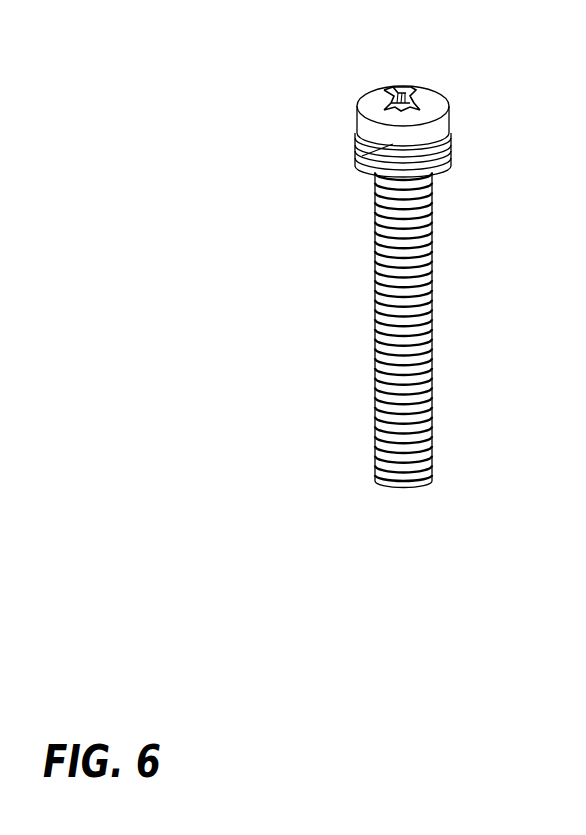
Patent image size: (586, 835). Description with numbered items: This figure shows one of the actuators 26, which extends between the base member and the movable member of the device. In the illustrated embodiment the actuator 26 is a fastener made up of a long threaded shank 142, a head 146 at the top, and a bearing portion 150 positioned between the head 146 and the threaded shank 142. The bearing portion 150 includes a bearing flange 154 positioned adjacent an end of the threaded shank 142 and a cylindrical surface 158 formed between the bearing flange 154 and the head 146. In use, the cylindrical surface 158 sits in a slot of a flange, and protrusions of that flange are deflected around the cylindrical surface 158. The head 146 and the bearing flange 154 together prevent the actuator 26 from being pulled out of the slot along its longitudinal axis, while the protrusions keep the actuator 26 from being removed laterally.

The actuator 26 is at (292, 237).
The bearing portion 150 is at (480, 132).
The head 146 is at (433, 103).
The cylindrical surface 158 is at (372, 155).
The bearing flange 154 is at (437, 162).
The threaded shank 142 is at (432, 292).